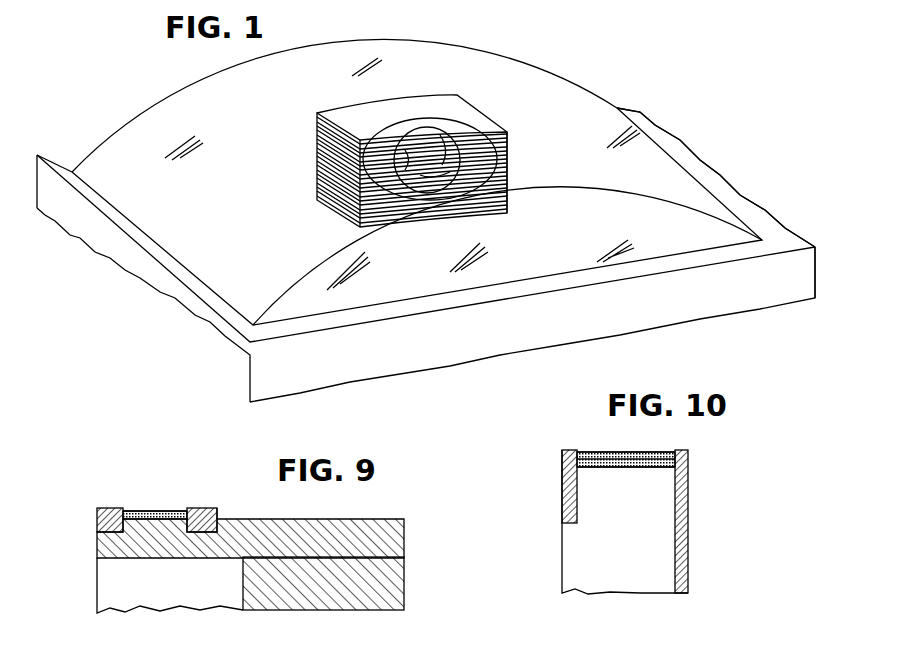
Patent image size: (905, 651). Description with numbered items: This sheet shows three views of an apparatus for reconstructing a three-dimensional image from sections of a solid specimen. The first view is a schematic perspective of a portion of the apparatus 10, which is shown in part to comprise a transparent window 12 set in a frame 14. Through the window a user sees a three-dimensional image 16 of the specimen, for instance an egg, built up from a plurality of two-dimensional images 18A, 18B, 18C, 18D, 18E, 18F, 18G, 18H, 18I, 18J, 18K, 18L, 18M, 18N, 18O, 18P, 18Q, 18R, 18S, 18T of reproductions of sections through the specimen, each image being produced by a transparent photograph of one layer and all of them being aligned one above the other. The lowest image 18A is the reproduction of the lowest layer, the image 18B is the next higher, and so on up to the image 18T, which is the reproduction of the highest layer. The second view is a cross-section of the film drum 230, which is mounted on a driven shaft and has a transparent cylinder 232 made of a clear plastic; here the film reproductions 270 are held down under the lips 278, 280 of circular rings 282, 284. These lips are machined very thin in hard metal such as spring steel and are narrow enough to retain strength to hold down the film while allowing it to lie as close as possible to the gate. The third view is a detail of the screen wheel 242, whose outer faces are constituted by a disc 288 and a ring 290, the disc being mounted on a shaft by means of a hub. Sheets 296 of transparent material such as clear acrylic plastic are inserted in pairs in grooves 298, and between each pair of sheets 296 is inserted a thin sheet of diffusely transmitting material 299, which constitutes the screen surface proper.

In FIG. 1, the apparatus 10 is at (125, 113).
In FIG. 1, the transparent window 12 is at (513, 58).
In FIG. 1, the frame 14 is at (658, 128).
In FIG. 1, the three-dimensional image 16 is at (414, 95).
In FIG. 1, the two-dimensional image 18A is at (328, 206).
In FIG. 1, the two-dimensional image 18B is at (318, 195).
In FIG. 1, the two-dimensional image 18C is at (318, 185).
In FIG. 1, the two-dimensional image 18D is at (509, 212).
In FIG. 1, the two-dimensional image 18E is at (509, 200).
In FIG. 1, the two-dimensional image 18F is at (508, 192).
In FIG. 1, the two-dimensional image 18G is at (318, 176).
In FIG. 1, the two-dimensional image 18H is at (318, 168).
In FIG. 1, the two-dimensional image 18I is at (318, 160).
In FIG. 1, the two-dimensional image 18J is at (318, 152).
In FIG. 1, the two-dimensional image 18K is at (318, 142).
In FIG. 1, the two-dimensional image 18L is at (318, 120).
In FIG. 1, the two-dimensional image 18M is at (331, 117).
In FIG. 1, the two-dimensional image 18N is at (510, 166).
In FIG. 1, the two-dimensional image 18O is at (510, 158).
In FIG. 1, the two-dimensional image 18P is at (510, 152).
In FIG. 1, the two-dimensional image 18Q is at (510, 146).
In FIG. 1, the two-dimensional image 18R is at (508, 139).
In FIG. 1, the two-dimensional image 18S is at (501, 131).
In FIG. 1, the two-dimensional image 18T is at (493, 128).
In FIG. 9, the film drum 230 is at (337, 607).
In FIG. 9, the transparent cylinder 232 is at (404, 518).
In FIG. 9, the reproductions 270 is at (158, 500).
In FIG. 9, the lip 278 is at (126, 510).
In FIG. 9, the lip 280 is at (187, 508).
In FIG. 9, the circular ring 282 is at (97, 517).
In FIG. 9, the circular ring 284 is at (217, 512).
In FIG. 10, the screen wheel 242 is at (692, 556).
In FIG. 10, the disc 288 is at (689, 510).
In FIG. 10, the ring 290 is at (562, 498).
In FIG. 10, the sheets of transparent material 296 is at (580, 457).
In FIG. 10, the grooves 298 is at (650, 463).
In FIG. 10, the diffusely transmitting material 299 is at (634, 440).